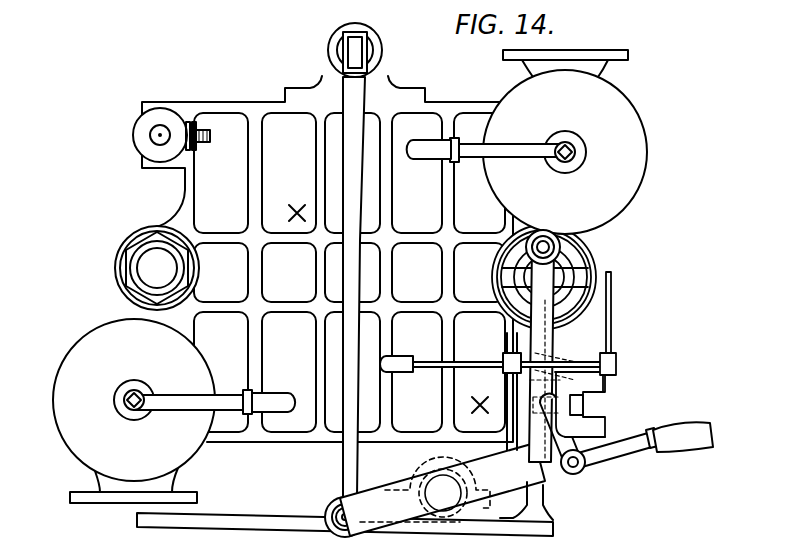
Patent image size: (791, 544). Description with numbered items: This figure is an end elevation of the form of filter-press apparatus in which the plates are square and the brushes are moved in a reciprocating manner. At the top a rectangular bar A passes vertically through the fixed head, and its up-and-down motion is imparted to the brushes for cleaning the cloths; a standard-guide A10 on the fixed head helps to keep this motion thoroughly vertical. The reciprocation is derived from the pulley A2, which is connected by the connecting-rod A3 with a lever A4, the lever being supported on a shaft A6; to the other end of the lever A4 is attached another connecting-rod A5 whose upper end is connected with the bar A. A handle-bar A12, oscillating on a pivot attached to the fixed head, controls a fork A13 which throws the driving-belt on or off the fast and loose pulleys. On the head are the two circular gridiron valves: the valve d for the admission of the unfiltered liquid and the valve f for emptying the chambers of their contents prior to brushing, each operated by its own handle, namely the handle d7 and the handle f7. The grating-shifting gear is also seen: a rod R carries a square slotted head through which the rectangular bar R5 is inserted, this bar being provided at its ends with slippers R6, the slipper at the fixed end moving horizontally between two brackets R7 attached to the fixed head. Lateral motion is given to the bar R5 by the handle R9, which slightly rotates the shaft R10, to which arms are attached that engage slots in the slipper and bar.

The rectangular bar A is at (357, 52).
The connecting-rod A5 is at (354, 287).
The standard-guide A10 is at (378, 86).
The pulley A2 is at (588, 266).
The connecting-rod A3 is at (530, 375).
The lever A4 is at (442, 489).
The shaft A6 is at (425, 489).
The handle-bar A12 is at (463, 362).
The fork A13 is at (612, 312).
The valve d is at (565, 142).
The handle d7 is at (522, 136).
The valve f is at (134, 411).
The handle f7 is at (184, 396).
The rod R is at (559, 428).
The rectangular bar R5 is at (588, 408).
The slipper R6 is at (605, 379).
The bracket R7 is at (563, 360).
The handle R9 is at (683, 427).
The shaft R10 is at (580, 472).